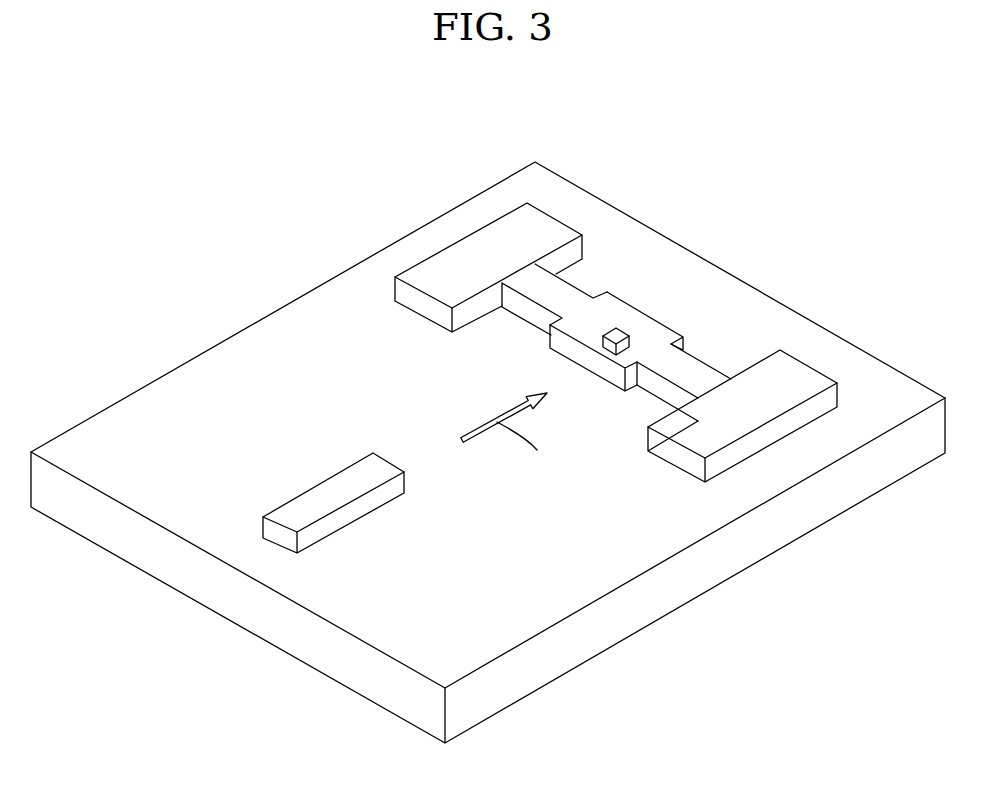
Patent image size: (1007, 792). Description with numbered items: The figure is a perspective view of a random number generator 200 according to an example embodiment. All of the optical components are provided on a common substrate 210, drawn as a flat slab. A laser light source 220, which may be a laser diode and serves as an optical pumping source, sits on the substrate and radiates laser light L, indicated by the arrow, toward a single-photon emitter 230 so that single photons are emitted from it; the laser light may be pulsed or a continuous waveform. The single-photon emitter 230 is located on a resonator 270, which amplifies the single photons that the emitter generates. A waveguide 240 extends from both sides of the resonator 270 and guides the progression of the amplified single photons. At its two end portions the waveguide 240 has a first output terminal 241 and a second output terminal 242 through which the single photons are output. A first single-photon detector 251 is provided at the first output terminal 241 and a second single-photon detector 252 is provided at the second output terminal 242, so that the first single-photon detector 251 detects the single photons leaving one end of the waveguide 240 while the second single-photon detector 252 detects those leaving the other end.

The random number generator 200 is at (805, 203).
The substrate 210 is at (692, 595).
The laser light source 220 is at (320, 485).
The single-photon emitter 230 is at (608, 355).
The waveguide 240 is at (568, 287).
The first output terminal 241 is at (515, 268).
The second output terminal 242 is at (715, 388).
The first single-photon detector 251 is at (552, 226).
The second single-photon detector 252 is at (807, 370).
The resonator 270 is at (647, 312).